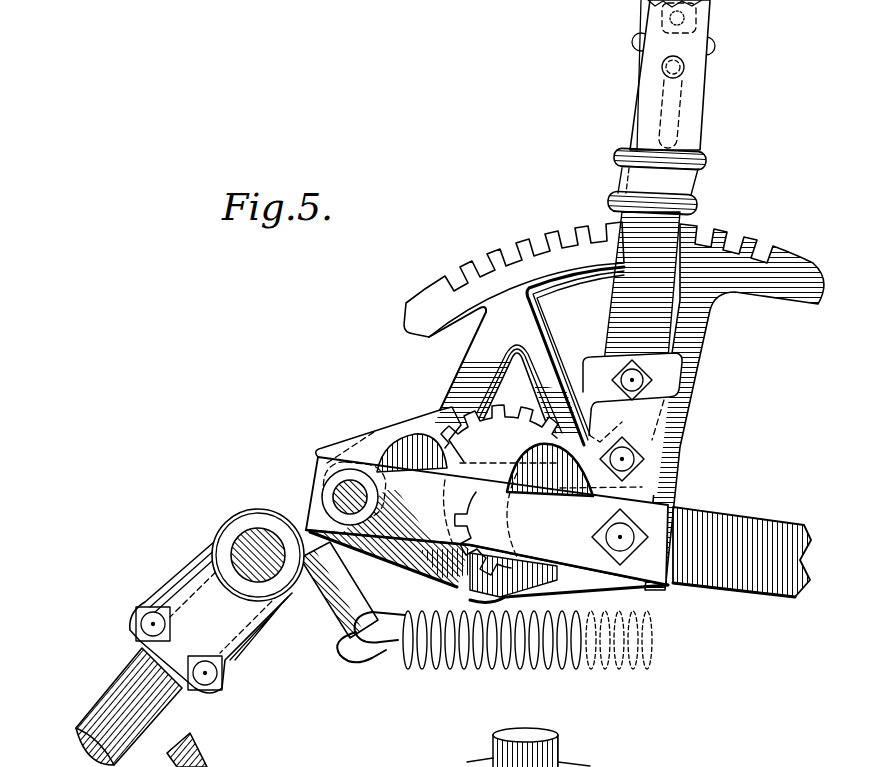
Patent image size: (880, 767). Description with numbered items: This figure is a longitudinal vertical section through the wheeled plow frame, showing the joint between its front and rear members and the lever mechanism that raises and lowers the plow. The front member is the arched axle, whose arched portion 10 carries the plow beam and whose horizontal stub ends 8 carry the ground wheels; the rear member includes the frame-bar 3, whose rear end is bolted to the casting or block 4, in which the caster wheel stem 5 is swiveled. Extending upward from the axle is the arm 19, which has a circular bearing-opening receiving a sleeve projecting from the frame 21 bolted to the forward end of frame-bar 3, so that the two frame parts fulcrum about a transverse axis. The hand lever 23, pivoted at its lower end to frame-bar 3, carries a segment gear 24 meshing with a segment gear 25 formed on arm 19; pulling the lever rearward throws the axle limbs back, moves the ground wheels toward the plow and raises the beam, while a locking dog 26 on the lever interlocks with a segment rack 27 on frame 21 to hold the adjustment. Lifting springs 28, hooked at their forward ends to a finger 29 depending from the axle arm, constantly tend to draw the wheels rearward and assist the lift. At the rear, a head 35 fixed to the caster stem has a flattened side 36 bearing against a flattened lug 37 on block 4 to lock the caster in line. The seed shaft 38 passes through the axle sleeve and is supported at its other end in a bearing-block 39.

The frame-bar 3 is at (738, 517).
The casting or block 4 is at (348, 766).
The caster wheel stem 5 is at (565, 757).
The horizontal stub ends 8 is at (104, 693).
The arched portion 10 is at (233, 550).
The arm 19 is at (317, 563).
The frame 21 is at (543, 333).
The hand lever 23 is at (687, 137).
The segment gear 24 is at (508, 424).
The segment gear 25 is at (410, 418).
The locking dog 26 is at (693, 203).
The segment rack 27 is at (753, 264).
The lifting springs 28 is at (571, 660).
The finger 29 is at (368, 604).
The head 35 is at (593, 766).
The flattened side 36 is at (462, 766).
The flattened lug 37 is at (419, 763).
The seed shaft 38 is at (330, 490).
The bearing-block 39 is at (351, 486).